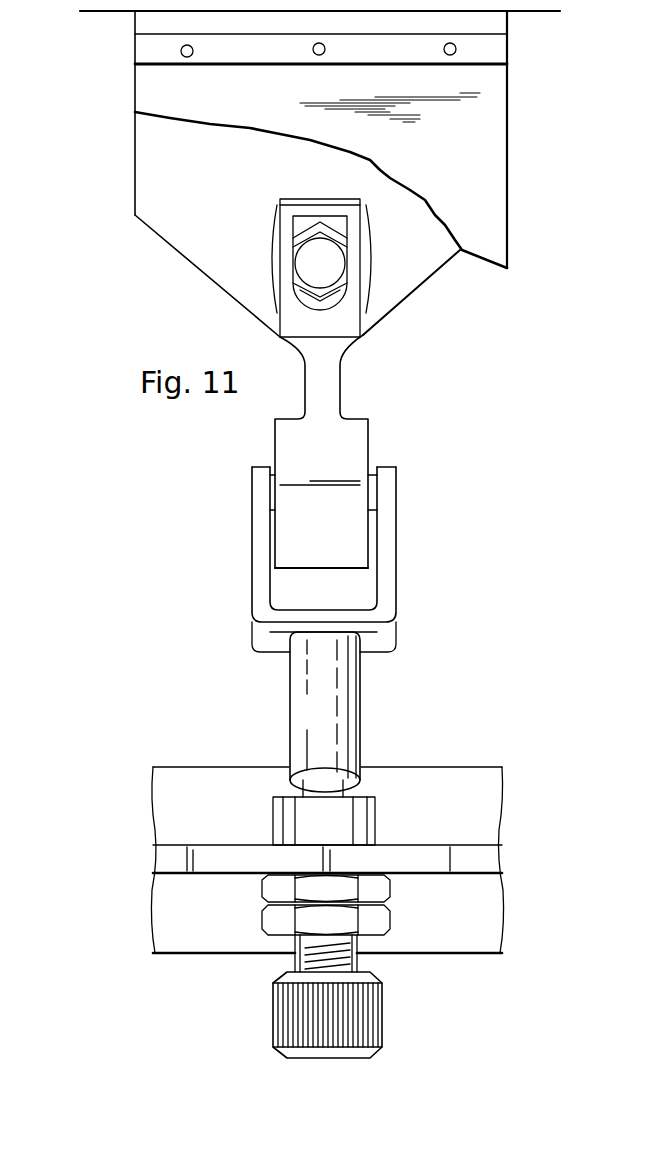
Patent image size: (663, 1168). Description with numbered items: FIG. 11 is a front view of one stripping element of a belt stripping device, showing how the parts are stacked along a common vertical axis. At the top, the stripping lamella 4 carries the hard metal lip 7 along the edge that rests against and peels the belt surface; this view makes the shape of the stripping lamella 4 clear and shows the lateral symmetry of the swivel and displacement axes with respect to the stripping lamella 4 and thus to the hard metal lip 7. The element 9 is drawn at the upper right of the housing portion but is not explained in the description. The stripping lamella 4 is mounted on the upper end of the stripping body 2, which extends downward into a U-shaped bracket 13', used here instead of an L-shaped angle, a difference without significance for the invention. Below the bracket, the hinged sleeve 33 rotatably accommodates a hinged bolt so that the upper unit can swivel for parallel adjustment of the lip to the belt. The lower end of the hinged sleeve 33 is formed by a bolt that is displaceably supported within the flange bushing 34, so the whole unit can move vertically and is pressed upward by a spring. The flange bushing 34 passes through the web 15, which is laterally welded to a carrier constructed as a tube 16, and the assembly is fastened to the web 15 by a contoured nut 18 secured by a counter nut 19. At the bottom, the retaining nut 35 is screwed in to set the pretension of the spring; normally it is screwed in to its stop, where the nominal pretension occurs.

The hard metal lip 7 is at (497, 17).
The housing 9 is at (495, 148).
The stripping lamella 4 is at (430, 263).
The stripping body 2 is at (327, 388).
The U-shaped bracket 13' is at (354, 559).
The hinged sleeve 33 is at (352, 688).
The tube 16 is at (465, 772).
The web 15 is at (222, 853).
The flange bushing 34 is at (287, 822).
The contoured nut 18 is at (385, 890).
The counter nut 19 is at (385, 920).
The retaining nut 35 is at (375, 1010).